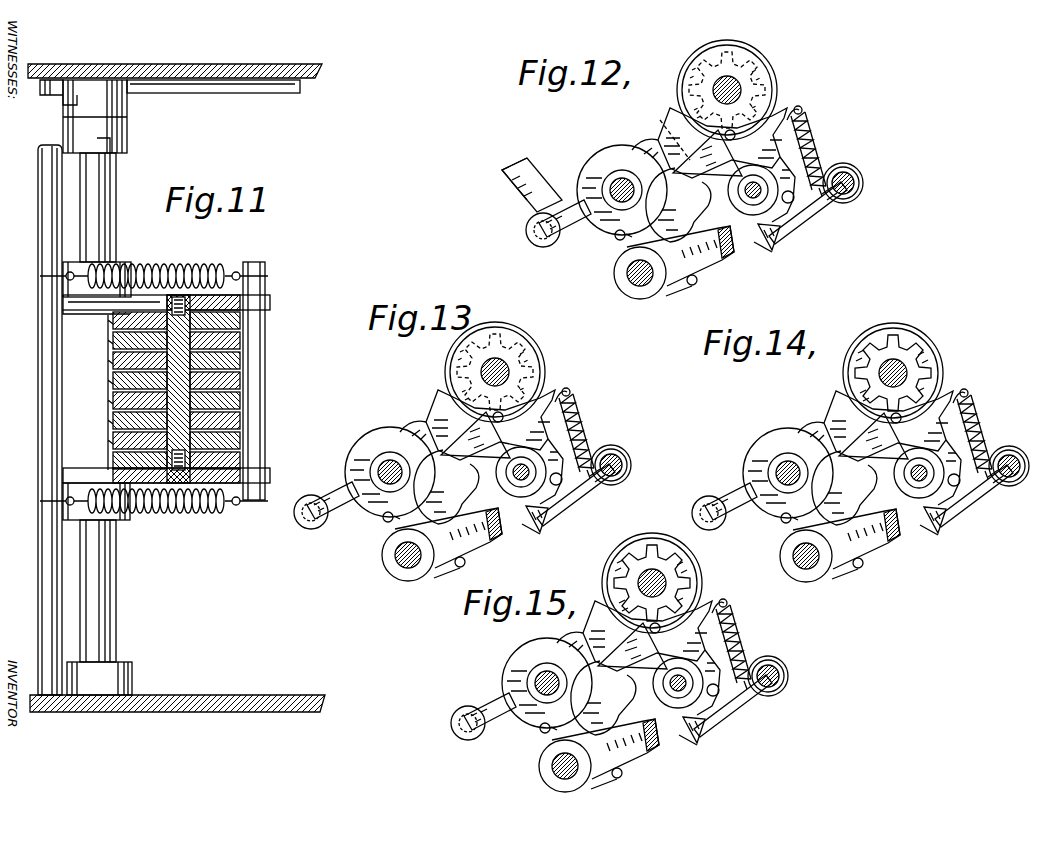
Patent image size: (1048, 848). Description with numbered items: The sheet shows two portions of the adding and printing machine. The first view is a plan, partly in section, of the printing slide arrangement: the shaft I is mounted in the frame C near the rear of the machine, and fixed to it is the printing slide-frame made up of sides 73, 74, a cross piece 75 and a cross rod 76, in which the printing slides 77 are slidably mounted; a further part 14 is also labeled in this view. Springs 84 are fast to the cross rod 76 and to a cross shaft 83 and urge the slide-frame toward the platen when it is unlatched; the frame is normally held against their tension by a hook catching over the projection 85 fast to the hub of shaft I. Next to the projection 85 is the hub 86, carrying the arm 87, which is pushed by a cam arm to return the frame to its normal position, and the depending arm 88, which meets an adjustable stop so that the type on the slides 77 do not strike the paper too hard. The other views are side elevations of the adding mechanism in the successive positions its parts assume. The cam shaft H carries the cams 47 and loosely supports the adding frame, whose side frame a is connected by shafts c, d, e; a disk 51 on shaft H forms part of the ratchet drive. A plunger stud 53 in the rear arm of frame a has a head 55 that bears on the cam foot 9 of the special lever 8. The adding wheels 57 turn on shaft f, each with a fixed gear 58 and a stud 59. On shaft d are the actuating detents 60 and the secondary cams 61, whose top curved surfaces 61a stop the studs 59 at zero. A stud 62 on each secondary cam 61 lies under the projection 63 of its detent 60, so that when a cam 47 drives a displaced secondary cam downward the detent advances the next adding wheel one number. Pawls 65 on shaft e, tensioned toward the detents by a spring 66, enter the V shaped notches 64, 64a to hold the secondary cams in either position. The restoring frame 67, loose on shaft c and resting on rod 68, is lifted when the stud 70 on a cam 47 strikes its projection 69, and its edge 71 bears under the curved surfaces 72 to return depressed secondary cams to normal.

In FIG. 11, the frame C is at (218, 65).
In FIG. 11, the arm 87 is at (250, 84).
In FIG. 11, the depending arm 88 is at (58, 82).
In FIG. 11, the hub 86 is at (113, 108).
In FIG. 11, the projection 85 is at (108, 145).
In FIG. 11, the shaft I is at (105, 233).
In FIG. 11, the cross shaft 83 is at (45, 390).
In FIG. 11, the side of printing slide-frame 74 is at (145, 300).
In FIG. 11, the upper plate 14 is at (100, 303).
In FIG. 11, the cross piece 75 is at (195, 352).
In FIG. 11, the printing slides 77 is at (232, 410).
In FIG. 11, the cross rod 76 is at (262, 444).
In FIG. 11, the disk 51 is at (268, 480).
In FIG. 11, the side of printing slide-frame 73 is at (105, 476).
In FIG. 11, the springs 84 is at (205, 268).
In FIG. 12, the shaft H is at (618, 185).
In FIG. 13, the shaft H is at (385, 470).
In FIG. 14, the shaft H is at (790, 468).
In FIG. 15, the shaft H is at (535, 680).
In FIG. 12, the cams 47 is at (611, 193).
In FIG. 13, the cams 47 is at (387, 461).
In FIG. 14, the cams 47 is at (745, 465).
In FIG. 15, the cams 47 is at (533, 670).
In FIG. 12, the head of plunger stud 55 is at (535, 245).
In FIG. 13, the head of plunger stud 55 is at (312, 530).
In FIG. 14, the head of plunger stud 55 is at (712, 525).
In FIG. 15, the head of plunger stud 55 is at (470, 742).
In FIG. 12, the plunger stud 53 is at (552, 250).
In FIG. 13, the plunger stud 53 is at (300, 525).
In FIG. 14, the plunger stud 53 is at (731, 501).
In FIG. 15, the plunger stud 53 is at (490, 711).
In FIG. 12, the foot 9 is at (545, 190).
In FIG. 12, the special lever 8 is at (510, 210).
In FIG. 12, the gears 58 is at (745, 52).
In FIG. 13, the gears 58 is at (535, 345).
In FIG. 14, the gears 58 is at (890, 330).
In FIG. 15, the gears 58 is at (690, 570).
In FIG. 12, the adding wheels 57 is at (770, 70).
In FIG. 13, the adding wheels 57 is at (545, 365).
In FIG. 14, the adding wheels 57 is at (930, 340).
In FIG. 15, the adding wheels 57 is at (700, 590).
In FIG. 12, the shaft f is at (740, 92).
In FIG. 13, the shaft f is at (510, 372).
In FIG. 14, the shaft f is at (900, 372).
In FIG. 15, the shaft f is at (653, 575).
In FIG. 12, the side frame a is at (690, 150).
In FIG. 13, the side frame a is at (430, 430).
In FIG. 14, the side frame a is at (840, 420).
In FIG. 15, the side frame a is at (612, 632).
In FIG. 12, the secondary cams 61 is at (707, 154).
In FIG. 13, the secondary cams 61 is at (475, 439).
In FIG. 14, the secondary cams 61 is at (868, 430).
In FIG. 15, the secondary cams 61 is at (632, 647).
In FIG. 12, the top curved surfaces 61a is at (680, 125).
In FIG. 12, the curved surfaces 72 is at (688, 190).
In FIG. 13, the curved surfaces 72 is at (446, 487).
In FIG. 14, the curved surfaces 72 is at (844, 487).
In FIG. 15, the curved surfaces 72 is at (603, 698).
In FIG. 12, the shaft d is at (748, 192).
In FIG. 13, the shaft d is at (525, 465).
In FIG. 14, the shaft d is at (912, 472).
In FIG. 15, the shaft d is at (672, 680).
In FIG. 12, the studs 59 is at (733, 136).
In FIG. 13, the studs 59 is at (470, 410).
In FIG. 14, the studs 59 is at (896, 418).
In FIG. 15, the studs 59 is at (655, 628).
In FIG. 12, the actuating detents 60 is at (800, 112).
In FIG. 13, the actuating detents 60 is at (565, 393).
In FIG. 14, the actuating detents 60 is at (965, 385).
In FIG. 15, the actuating detents 60 is at (715, 618).
In FIG. 12, the spring 66 is at (812, 150).
In FIG. 13, the spring 66 is at (580, 425).
In FIG. 14, the spring 66 is at (965, 415).
In FIG. 15, the spring 66 is at (735, 635).
In FIG. 12, the projection 63 is at (795, 192).
In FIG. 13, the projection 63 is at (565, 465).
In FIG. 14, the projection 63 is at (954, 480).
In FIG. 15, the projection 63 is at (725, 680).
In FIG. 12, the shaft e is at (862, 185).
In FIG. 13, the shaft e is at (625, 462).
In FIG. 14, the shaft e is at (1010, 450).
In FIG. 15, the shaft e is at (788, 677).
In FIG. 12, the studs 62 is at (830, 200).
In FIG. 13, the studs 62 is at (575, 490).
In FIG. 14, the studs 62 is at (990, 478).
In FIG. 12, the pawls 65 is at (790, 240).
In FIG. 13, the pawls 65 is at (540, 505).
In FIG. 14, the pawls 65 is at (940, 548).
In FIG. 15, the pawls 65 is at (700, 740).
In FIG. 12, the V shaped notch 64 is at (768, 250).
In FIG. 13, the V shaped notch 64 is at (530, 520).
In FIG. 14, the V shaped notch 64 is at (945, 520).
In FIG. 15, the V shaped notch 64 is at (705, 732).
In FIG. 12, the V shaped notch 64a is at (782, 255).
In FIG. 13, the V shaped notch 64a is at (540, 520).
In FIG. 14, the V shaped notch 64a is at (950, 500).
In FIG. 15, the V shaped notch 64a is at (705, 728).
In FIG. 12, the edge 71 is at (740, 255).
In FIG. 13, the edge 71 is at (483, 519).
In FIG. 14, the edge 71 is at (900, 540).
In FIG. 15, the edge 71 is at (660, 748).
In FIG. 12, the restoring frame 67 is at (665, 285).
In FIG. 13, the restoring frame 67 is at (420, 580).
In FIG. 14, the restoring frame 67 is at (835, 575).
In FIG. 15, the restoring frame 67 is at (600, 780).
In FIG. 12, the shaft c is at (650, 272).
In FIG. 13, the shaft c is at (408, 555).
In FIG. 14, the shaft c is at (805, 555).
In FIG. 15, the shaft c is at (560, 768).
In FIG. 12, the rod 68 is at (700, 282).
In FIG. 13, the rod 68 is at (460, 560).
In FIG. 14, the rod 68 is at (870, 560).
In FIG. 15, the rod 68 is at (625, 770).
In FIG. 12, the projection 69 is at (620, 240).
In FIG. 13, the projection 69 is at (385, 520).
In FIG. 14, the projection 69 is at (790, 525).
In FIG. 15, the projection 69 is at (540, 730).
In FIG. 12, the stud 70 is at (618, 238).
In FIG. 13, the stud 70 is at (392, 518).
In FIG. 14, the stud 70 is at (813, 500).
In FIG. 15, the stud 70 is at (550, 730).